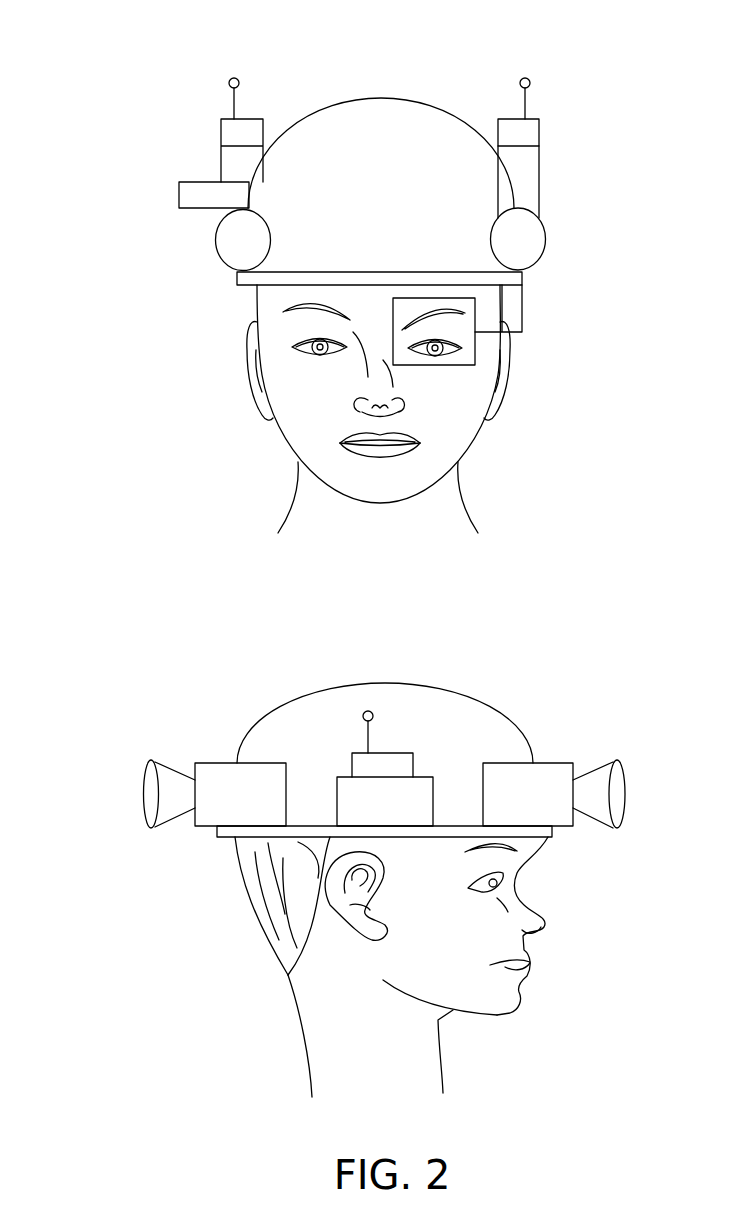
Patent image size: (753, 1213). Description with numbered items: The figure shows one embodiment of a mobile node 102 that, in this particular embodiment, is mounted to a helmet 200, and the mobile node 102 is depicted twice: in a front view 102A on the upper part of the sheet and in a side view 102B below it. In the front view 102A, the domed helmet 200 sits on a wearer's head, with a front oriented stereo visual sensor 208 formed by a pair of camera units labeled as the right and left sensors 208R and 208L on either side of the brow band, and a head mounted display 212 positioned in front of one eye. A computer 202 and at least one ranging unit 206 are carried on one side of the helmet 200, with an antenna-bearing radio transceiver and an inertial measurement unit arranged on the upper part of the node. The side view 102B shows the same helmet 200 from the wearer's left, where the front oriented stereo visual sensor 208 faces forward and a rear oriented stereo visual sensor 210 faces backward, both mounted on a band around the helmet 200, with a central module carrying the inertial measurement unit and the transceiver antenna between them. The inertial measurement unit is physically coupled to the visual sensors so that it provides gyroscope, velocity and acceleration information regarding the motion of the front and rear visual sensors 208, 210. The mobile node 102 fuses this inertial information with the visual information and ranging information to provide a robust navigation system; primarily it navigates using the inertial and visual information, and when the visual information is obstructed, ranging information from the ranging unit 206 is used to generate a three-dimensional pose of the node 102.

The mobile node 102 is at (588, 463).
The front view 102A is at (196, 455).
The side view 102B is at (167, 680).
The helmet 200 is at (370, 113).
The computer 202 is at (525, 173).
The ranging unit 206 is at (541, 127).
The front oriented stereo visual sensor 208 is at (544, 792).
The front oriented stereo visual sensor 208R is at (233, 248).
The front oriented stereo visual sensor 208L is at (525, 248).
The rear oriented stereo visual sensor 210 is at (223, 790).
The head mounted display 212 is at (473, 352).